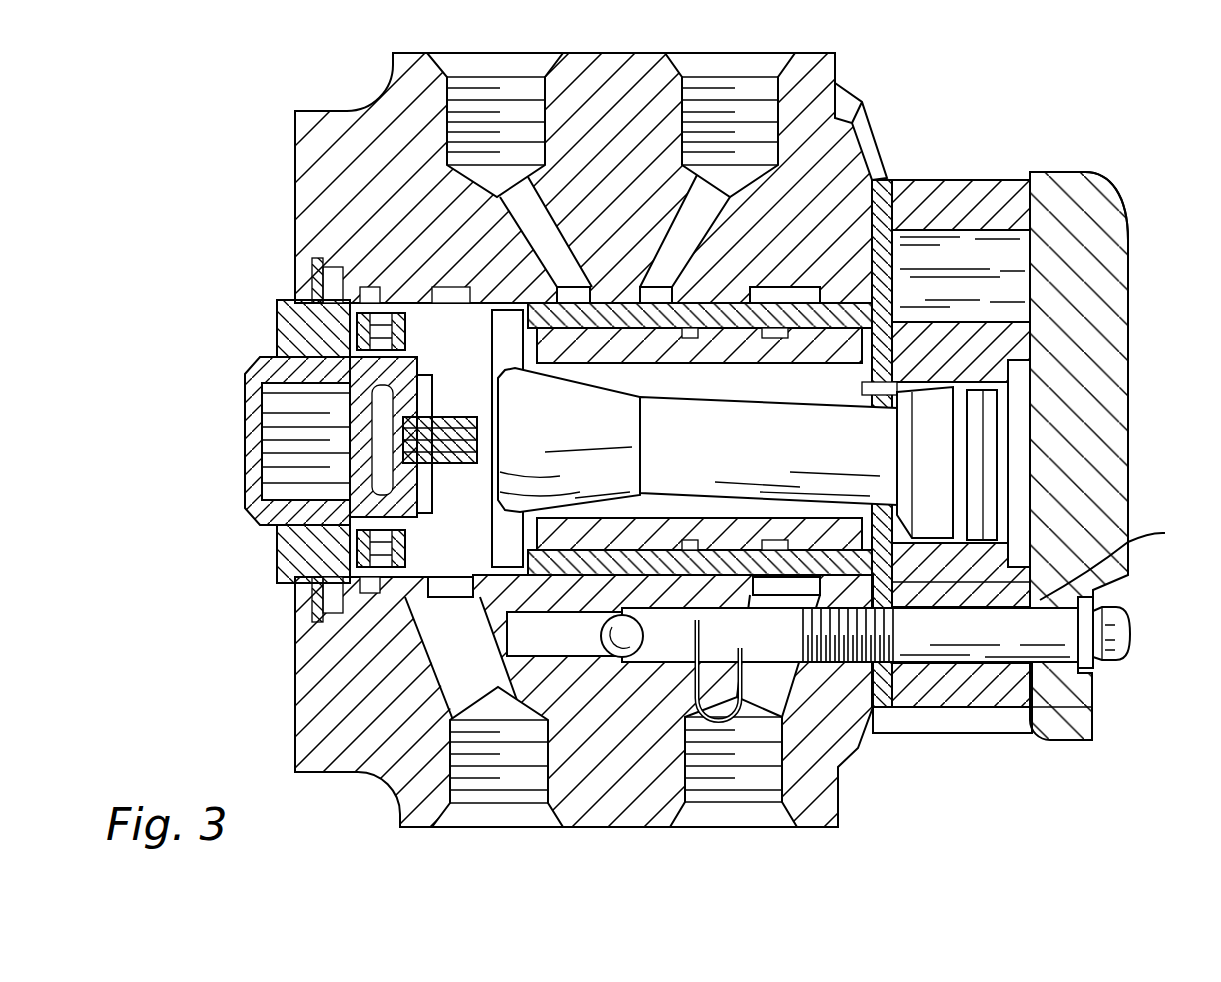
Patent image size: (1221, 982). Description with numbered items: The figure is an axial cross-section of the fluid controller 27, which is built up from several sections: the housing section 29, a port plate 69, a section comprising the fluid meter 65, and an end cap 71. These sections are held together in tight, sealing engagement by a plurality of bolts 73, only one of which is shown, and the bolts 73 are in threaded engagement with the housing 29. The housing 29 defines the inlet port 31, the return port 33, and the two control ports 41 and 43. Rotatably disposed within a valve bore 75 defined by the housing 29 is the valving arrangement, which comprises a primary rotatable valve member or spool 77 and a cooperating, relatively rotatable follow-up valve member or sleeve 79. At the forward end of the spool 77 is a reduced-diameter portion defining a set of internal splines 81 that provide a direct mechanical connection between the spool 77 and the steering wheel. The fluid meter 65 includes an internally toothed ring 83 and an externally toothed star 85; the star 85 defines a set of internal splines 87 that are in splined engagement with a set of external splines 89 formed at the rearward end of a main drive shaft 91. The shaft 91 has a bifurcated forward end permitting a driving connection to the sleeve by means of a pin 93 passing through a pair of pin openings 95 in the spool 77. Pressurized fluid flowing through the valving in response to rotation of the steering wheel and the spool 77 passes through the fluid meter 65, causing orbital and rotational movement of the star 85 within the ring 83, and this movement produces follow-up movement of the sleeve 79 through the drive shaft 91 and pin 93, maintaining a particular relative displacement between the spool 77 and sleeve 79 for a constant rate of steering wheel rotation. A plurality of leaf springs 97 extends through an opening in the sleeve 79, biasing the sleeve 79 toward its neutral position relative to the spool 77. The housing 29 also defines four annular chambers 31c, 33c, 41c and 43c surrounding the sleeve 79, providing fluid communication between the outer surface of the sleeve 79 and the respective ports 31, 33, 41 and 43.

The fluid controller 27 is at (1005, 158).
The housing section 29 is at (300, 145).
The inlet port 31 is at (765, 755).
The annular chamber 31c is at (782, 588).
The return port 33 is at (533, 755).
The annular chamber 33c is at (452, 598).
The control port 41 is at (510, 92).
The annular chamber 41c is at (556, 318).
The control port 43 is at (735, 92).
The annular chamber 43c is at (652, 308).
The fluid meter 65 is at (937, 180).
The port plate 69 is at (885, 722).
The end cap 71 is at (1133, 395).
The bolt 73 is at (1135, 632).
The valve bore 75 is at (813, 328).
The primary rotatable valve member 77 is at (633, 528).
The follow-up valve member 79 is at (728, 337).
The internal splines 81 is at (262, 440).
The internally toothed ring 83 is at (983, 690).
The externally toothed star 85 is at (1015, 600).
The internal splines 87 is at (892, 384).
The external splines 89 is at (920, 460).
The main drive shaft 91 is at (762, 460).
The pin 93 is at (510, 317).
The pin openings 95 is at (527, 363).
The leaf springs 97 is at (442, 417).